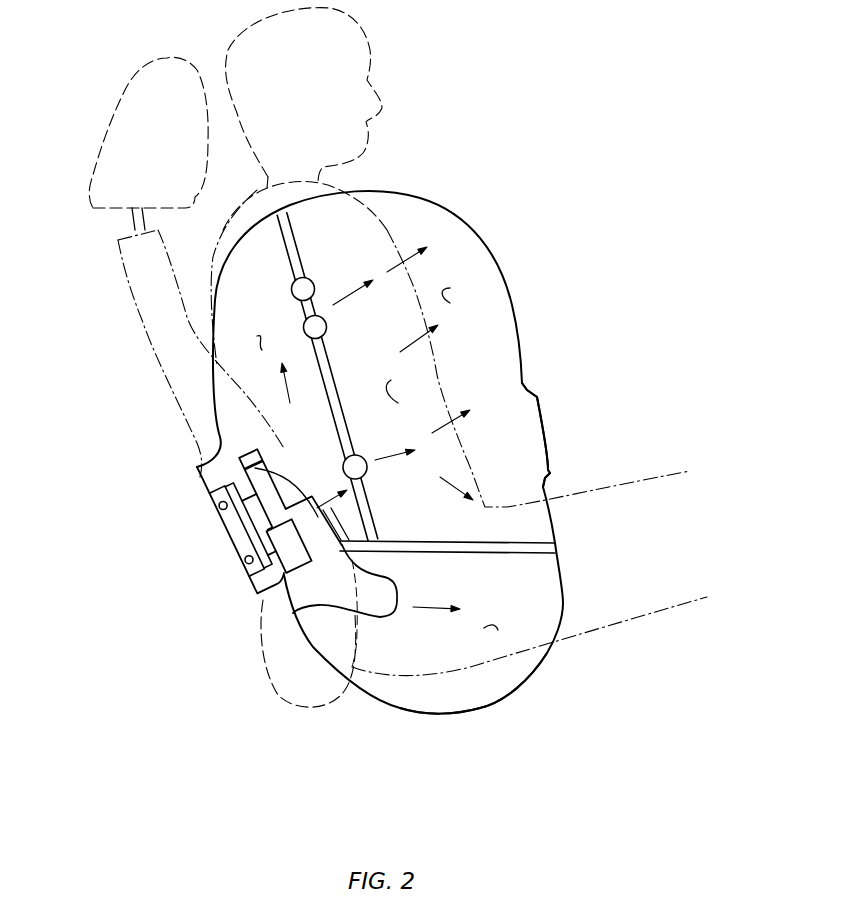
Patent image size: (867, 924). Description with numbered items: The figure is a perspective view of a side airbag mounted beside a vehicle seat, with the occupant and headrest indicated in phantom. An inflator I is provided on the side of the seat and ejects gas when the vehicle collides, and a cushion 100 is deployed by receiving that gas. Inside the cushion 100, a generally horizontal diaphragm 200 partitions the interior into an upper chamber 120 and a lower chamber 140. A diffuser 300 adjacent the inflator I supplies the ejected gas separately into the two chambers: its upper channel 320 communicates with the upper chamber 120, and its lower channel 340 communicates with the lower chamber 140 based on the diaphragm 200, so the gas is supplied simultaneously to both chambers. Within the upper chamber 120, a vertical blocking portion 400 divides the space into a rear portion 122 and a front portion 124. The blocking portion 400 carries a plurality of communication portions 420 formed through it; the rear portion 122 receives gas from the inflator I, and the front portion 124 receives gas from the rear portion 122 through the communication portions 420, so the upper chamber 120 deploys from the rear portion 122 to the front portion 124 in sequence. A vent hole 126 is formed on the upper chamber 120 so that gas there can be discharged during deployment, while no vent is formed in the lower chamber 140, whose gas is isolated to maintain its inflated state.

The cushion 100 is at (474, 208).
The upper chamber 120 is at (398, 394).
The rear portion 122 is at (257, 336).
The front portion 124 is at (451, 289).
The vent hole 126 is at (546, 438).
The lower chamber 140 is at (498, 630).
The diaphragm 200 is at (527, 547).
The diffuser 300 is at (246, 611).
The upper channel 320 is at (255, 468).
The lower channel 340 is at (397, 610).
The blocking portion 400 is at (333, 388).
The communication portions 420 is at (292, 289).
The inflator I is at (270, 513).